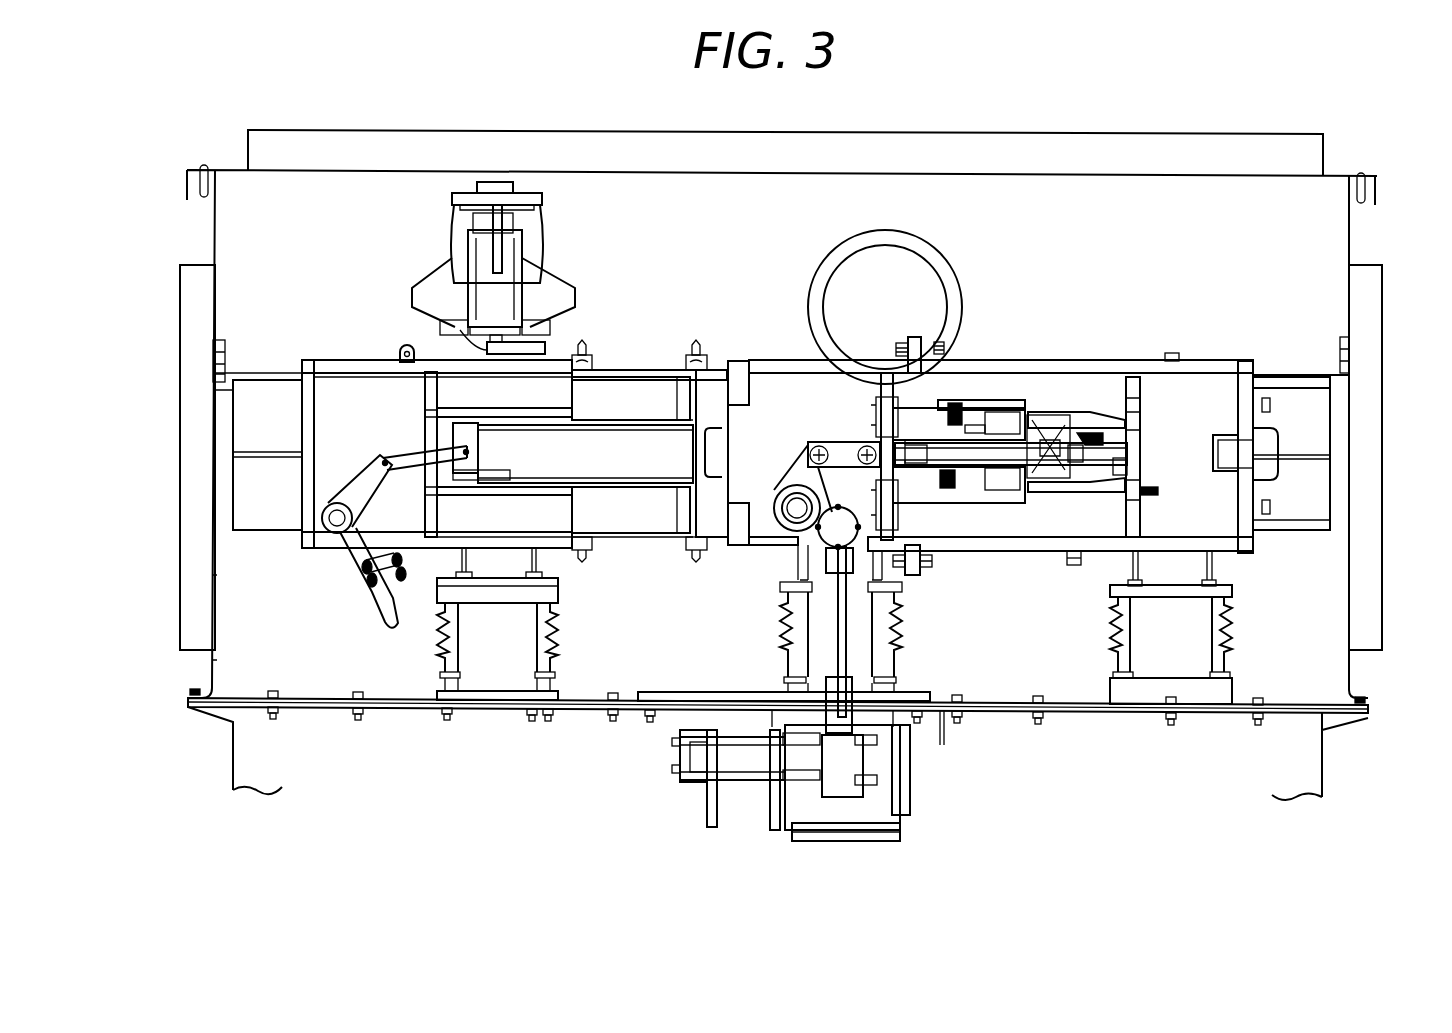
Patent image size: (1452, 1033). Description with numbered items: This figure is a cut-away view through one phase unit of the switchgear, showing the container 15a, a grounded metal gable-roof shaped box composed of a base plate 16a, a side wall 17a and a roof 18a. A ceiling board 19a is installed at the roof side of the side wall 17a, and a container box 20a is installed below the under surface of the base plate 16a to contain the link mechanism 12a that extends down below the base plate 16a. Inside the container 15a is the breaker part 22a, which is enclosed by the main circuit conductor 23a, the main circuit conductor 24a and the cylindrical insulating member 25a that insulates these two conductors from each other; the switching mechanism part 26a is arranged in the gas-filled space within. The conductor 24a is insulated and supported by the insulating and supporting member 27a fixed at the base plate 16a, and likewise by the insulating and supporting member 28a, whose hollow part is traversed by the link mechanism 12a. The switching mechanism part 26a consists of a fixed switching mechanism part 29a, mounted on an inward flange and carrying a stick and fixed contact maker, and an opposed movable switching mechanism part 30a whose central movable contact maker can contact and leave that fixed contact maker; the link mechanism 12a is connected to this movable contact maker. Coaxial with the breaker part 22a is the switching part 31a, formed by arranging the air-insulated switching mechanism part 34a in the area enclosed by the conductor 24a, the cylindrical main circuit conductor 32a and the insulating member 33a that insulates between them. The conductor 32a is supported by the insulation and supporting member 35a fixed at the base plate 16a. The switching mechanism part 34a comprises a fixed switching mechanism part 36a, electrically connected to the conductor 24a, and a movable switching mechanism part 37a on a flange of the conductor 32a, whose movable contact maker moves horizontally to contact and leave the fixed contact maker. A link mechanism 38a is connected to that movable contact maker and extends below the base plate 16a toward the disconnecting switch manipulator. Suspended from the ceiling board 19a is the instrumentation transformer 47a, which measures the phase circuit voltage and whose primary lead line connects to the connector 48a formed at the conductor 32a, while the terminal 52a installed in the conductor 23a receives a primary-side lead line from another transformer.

The link mechanism 12a is at (885, 758).
The container 15a is at (168, 205).
The base plate 16a is at (242, 700).
The side wall 17a is at (1350, 215).
The roof 18a is at (347, 98).
The ceiling board 19a is at (322, 172).
The container box 20a is at (853, 842).
The breaker part 22a is at (1074, 270).
The main circuit conductor 23a is at (1222, 365).
The main circuit conductor 24a is at (792, 360).
The insulating member 25a is at (970, 360).
The switching mechanism part 26a is at (1010, 655).
The insulating and supporting member 27a is at (1225, 600).
The insulating and supporting member 28a is at (782, 605).
The fixed switching mechanism part 29a is at (1063, 490).
The movable switching mechanism part 30a is at (965, 503).
The switching part 31a is at (706, 275).
The main circuit conductor 32a is at (335, 355).
The insulating member 33a is at (605, 370).
The switching mechanism part 34a is at (725, 632).
The insulation and supporting member 35a is at (485, 660).
The fixed switching mechanism part 36a is at (673, 510).
The movable switching mechanism part 37a is at (600, 487).
The link mechanism 38a is at (325, 548).
The instrumentation transformer 47a is at (542, 220).
The connector 48a is at (480, 345).
The terminal 52a is at (1172, 352).